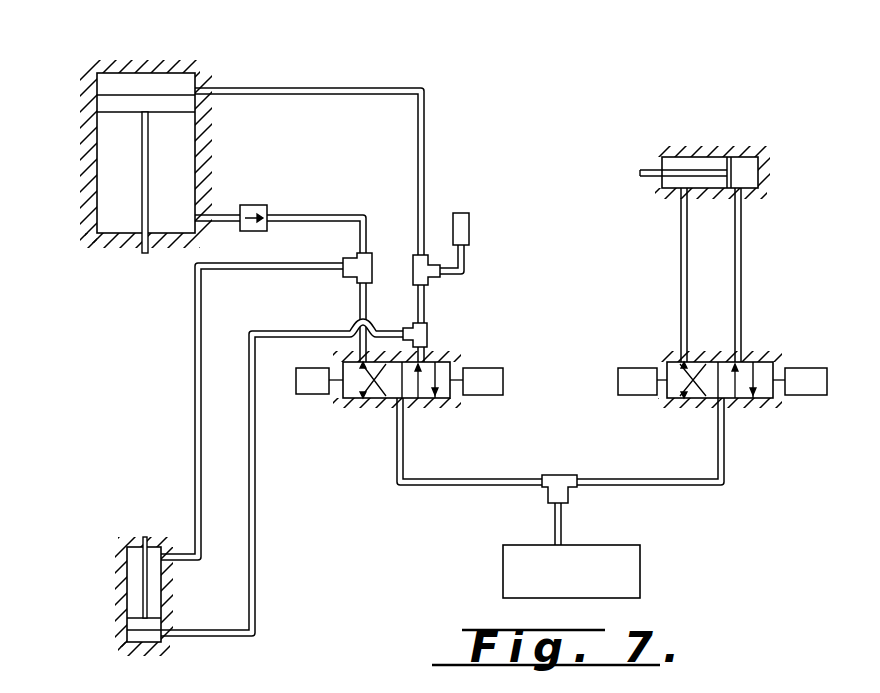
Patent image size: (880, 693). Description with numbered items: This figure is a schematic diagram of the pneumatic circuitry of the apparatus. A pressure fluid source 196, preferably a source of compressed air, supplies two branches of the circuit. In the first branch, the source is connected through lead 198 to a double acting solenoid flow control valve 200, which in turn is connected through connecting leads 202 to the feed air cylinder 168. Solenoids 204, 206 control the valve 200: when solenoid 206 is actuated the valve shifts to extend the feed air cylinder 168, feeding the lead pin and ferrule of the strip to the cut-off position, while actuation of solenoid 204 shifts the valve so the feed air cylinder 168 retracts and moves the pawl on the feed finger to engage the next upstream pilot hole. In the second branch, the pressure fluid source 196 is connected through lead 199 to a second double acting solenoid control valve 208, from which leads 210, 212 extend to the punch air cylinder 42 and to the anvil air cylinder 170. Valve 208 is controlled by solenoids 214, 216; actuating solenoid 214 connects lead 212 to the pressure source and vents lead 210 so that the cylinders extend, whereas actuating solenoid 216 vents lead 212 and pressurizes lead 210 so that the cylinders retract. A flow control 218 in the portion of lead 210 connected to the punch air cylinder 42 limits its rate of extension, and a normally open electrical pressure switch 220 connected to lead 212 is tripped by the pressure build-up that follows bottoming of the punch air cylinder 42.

The punch air cylinder 42 is at (203, 127).
The feed air cylinder 168 is at (705, 156).
The hydraulic cylinder 170 is at (125, 590).
The pressure fluid source 196 is at (618, 553).
The lead 198 is at (595, 476).
The lead 199 is at (405, 446).
The double acting solenoid flow control valve 200 is at (725, 405).
The connecting leads 202 is at (765, 262).
The solenoid 204 is at (630, 366).
The solenoid 206 is at (800, 367).
The second double acting solenoid control valve 208 is at (368, 404).
The lead 210 is at (360, 293).
The lead 212 is at (422, 356).
The solenoid 214 is at (490, 370).
The solenoid 216 is at (307, 400).
The flow control 218 is at (256, 204).
The normally open electrical pressure switch 220 is at (470, 229).